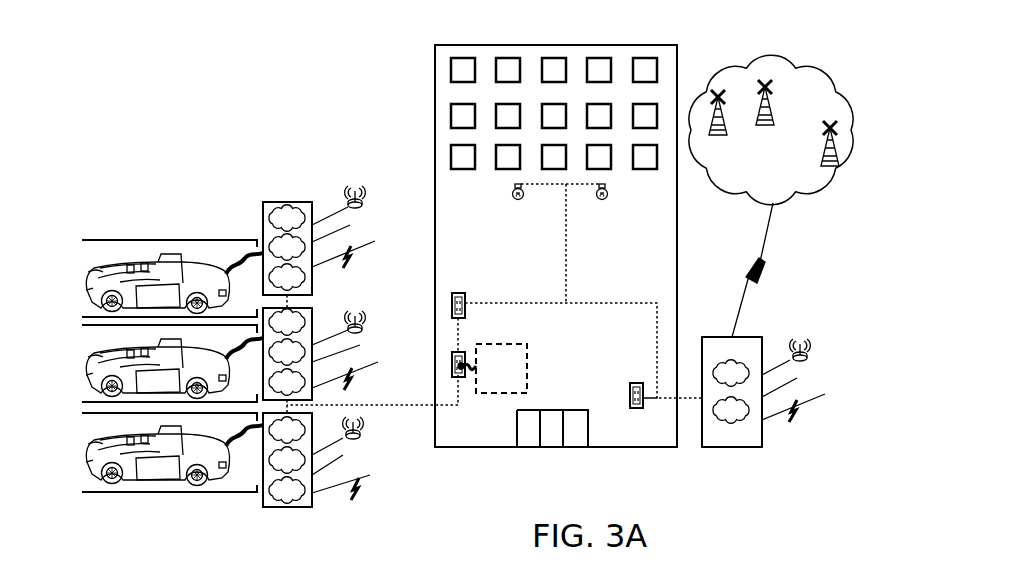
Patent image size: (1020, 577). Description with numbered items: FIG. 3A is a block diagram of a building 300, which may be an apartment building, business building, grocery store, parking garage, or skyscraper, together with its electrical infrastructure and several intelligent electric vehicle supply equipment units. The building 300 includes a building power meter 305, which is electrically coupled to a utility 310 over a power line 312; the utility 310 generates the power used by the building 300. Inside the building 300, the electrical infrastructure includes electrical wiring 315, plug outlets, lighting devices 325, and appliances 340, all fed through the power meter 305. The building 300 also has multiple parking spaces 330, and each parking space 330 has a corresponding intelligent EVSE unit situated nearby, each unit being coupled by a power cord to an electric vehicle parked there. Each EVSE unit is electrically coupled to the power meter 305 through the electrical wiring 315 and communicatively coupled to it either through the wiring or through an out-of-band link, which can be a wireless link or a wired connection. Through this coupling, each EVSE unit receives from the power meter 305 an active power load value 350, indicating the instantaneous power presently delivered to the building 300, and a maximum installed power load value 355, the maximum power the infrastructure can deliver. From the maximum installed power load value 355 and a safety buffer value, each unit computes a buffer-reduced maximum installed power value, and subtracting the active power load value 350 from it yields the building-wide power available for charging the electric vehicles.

The building 300 is at (434, 118).
The building power meter 305 is at (753, 377).
The utility 310 is at (760, 62).
The power line 312 is at (751, 263).
The electrical wiring 315 is at (533, 304).
The lighting devices 325 is at (515, 189).
The parking spaces 330 is at (166, 204).
The appliances 340 is at (518, 344).
The active power load value 350 is at (731, 373).
The maximum installed power load value 355 is at (731, 410).